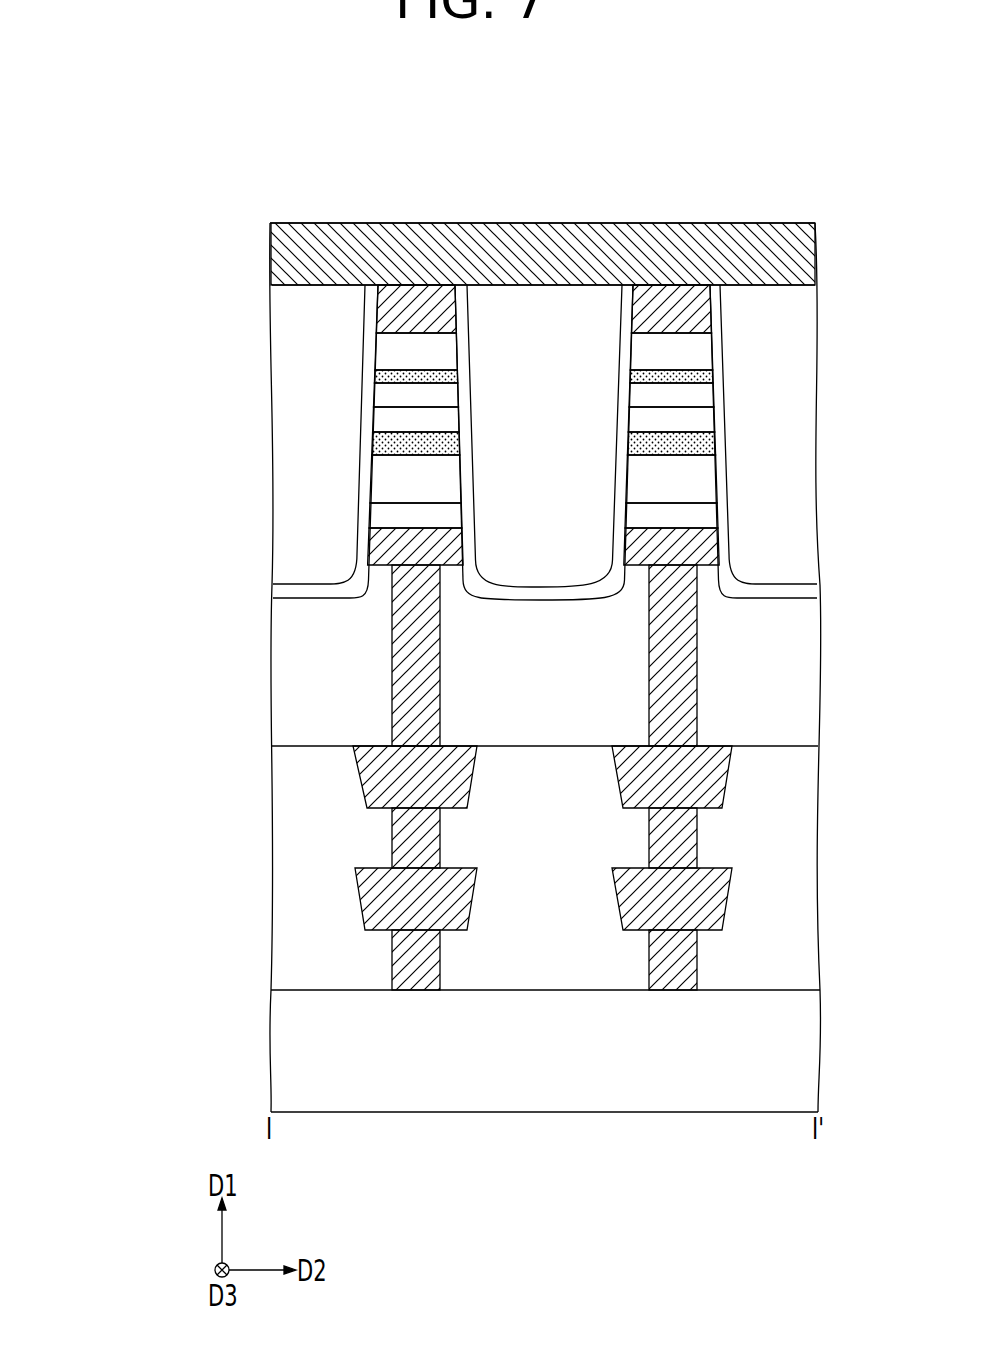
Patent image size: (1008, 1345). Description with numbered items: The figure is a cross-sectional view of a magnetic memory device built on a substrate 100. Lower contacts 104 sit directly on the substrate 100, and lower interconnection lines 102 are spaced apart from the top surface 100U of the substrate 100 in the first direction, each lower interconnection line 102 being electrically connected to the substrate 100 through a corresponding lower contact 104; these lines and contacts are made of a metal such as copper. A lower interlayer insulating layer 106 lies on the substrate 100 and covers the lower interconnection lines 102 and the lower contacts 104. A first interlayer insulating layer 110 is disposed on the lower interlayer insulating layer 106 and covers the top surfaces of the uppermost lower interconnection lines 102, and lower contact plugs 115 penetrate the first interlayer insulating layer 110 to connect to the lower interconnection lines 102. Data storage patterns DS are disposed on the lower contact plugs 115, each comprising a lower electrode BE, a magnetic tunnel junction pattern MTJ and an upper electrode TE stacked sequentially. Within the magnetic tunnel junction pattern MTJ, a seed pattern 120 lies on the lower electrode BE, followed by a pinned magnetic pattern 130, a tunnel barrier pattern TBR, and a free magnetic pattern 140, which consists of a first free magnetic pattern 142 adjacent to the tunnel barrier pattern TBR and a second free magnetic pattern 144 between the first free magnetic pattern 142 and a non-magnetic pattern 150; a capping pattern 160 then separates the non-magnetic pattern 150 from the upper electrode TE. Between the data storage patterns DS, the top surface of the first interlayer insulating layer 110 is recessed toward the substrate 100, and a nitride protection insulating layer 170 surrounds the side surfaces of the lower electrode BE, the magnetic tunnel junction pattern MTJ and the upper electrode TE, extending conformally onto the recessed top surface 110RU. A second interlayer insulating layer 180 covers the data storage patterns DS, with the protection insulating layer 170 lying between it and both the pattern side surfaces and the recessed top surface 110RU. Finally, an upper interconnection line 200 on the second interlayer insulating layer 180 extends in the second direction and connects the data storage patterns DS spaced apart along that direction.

The substrate 100 is at (806, 1048).
The top surface of the substrate 100U is at (313, 989).
The lower interconnection line 102 is at (720, 775).
The lower contact 104 is at (688, 828).
The lower interlayer insulating layer 106 is at (810, 868).
The first interlayer insulating layer 110 is at (806, 663).
The recessed top surface of the first interlayer insulating layer 110RU is at (522, 597).
The lower contact plug 115 is at (690, 703).
The seed pattern 120 is at (454, 517).
The pinned magnetic pattern 130 is at (380, 482).
The tunnel barrier pattern TBR is at (378, 443).
The free magnetic pattern 140 is at (419, 419).
The first free magnetic pattern 142 is at (385, 417).
The second free magnetic pattern 144 is at (387, 395).
The non-magnetic pattern 150 is at (388, 377).
The capping pattern 160 is at (388, 348).
The protection insulating layer 170 is at (810, 592).
The second interlayer insulating layer 180 is at (806, 349).
The upper interconnection line 200 is at (806, 257).
The data storage pattern DS is at (364, 425).
The magnetic tunnel junction pattern MTJ is at (387, 433).
The upper electrode TE is at (390, 315).
The lower electrode BE is at (362, 538).